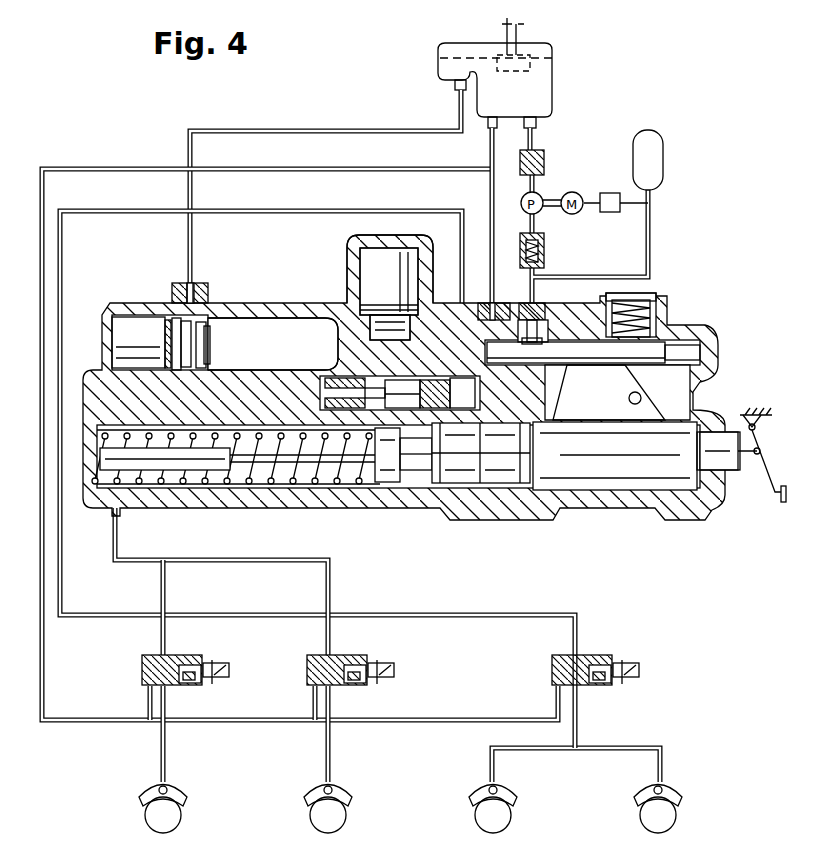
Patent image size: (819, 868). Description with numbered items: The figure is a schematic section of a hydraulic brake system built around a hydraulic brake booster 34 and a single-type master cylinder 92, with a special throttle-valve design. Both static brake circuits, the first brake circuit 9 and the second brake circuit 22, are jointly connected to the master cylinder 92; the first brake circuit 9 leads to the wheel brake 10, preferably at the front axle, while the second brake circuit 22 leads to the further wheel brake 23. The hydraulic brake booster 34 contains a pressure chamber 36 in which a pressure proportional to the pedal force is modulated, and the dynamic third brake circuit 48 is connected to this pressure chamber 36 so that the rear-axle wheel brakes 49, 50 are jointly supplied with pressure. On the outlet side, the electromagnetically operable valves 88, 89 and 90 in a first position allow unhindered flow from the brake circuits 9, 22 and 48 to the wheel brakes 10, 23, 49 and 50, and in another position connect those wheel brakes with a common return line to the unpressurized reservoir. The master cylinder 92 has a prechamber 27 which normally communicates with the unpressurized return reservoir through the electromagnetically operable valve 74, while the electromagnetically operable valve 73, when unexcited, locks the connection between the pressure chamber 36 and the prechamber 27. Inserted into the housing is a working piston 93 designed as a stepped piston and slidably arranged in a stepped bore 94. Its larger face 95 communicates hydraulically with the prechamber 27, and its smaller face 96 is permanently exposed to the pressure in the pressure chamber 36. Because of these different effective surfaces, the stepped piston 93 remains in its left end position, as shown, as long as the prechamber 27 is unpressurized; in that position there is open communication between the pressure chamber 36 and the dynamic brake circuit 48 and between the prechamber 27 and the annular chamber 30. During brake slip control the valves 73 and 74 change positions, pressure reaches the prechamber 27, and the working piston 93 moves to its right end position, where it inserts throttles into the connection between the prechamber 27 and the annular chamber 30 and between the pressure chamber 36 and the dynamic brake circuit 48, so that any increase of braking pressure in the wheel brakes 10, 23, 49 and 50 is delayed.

The first brake circuit 9 is at (166, 592).
The wheel brake 10 is at (178, 817).
The second brake circuit 22 is at (228, 558).
The wheel brake 23 is at (345, 817).
The prechamber 27 is at (226, 325).
The annular chamber 30 is at (426, 490).
The hydraulic brake booster 34 is at (610, 518).
The pressure chamber 36 is at (604, 402).
The third brake circuit 48 is at (402, 209).
The wheel brake 49 is at (510, 817).
The wheel brake 50 is at (676, 817).
The electromagnetically operable valve 73 is at (362, 262).
The electromagnetically operable valve 74 is at (132, 314).
The electromagnetically operable valve 88 is at (142, 673).
The electromagnetically operable valve 89 is at (307, 673).
The electromagnetically operable valve 90 is at (552, 667).
The master cylinder 92 is at (338, 514).
The working piston 93 is at (332, 378).
The stepped bore 94 is at (338, 376).
The larger face 95 is at (300, 378).
The smaller face 96 is at (462, 350).